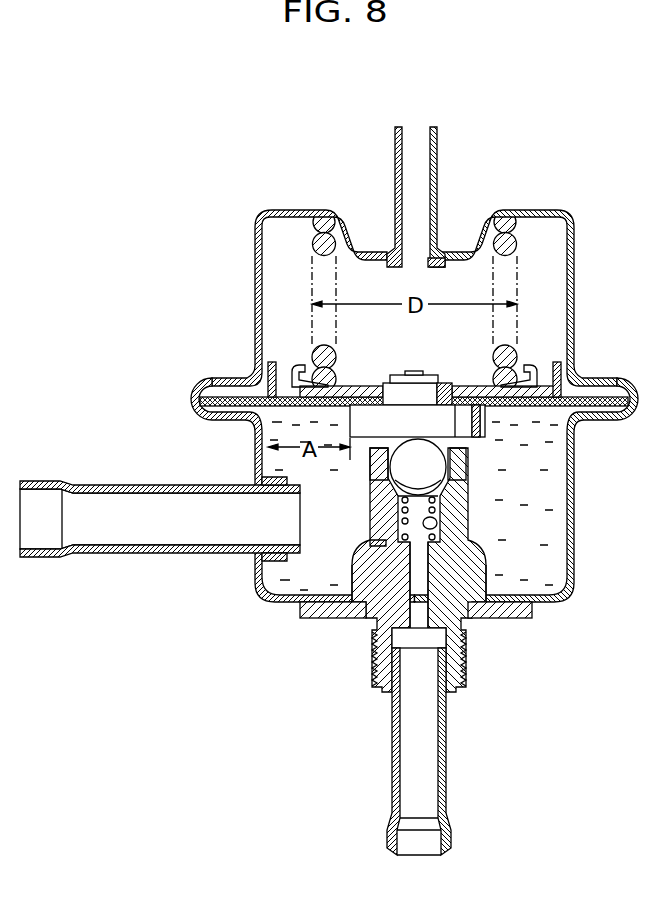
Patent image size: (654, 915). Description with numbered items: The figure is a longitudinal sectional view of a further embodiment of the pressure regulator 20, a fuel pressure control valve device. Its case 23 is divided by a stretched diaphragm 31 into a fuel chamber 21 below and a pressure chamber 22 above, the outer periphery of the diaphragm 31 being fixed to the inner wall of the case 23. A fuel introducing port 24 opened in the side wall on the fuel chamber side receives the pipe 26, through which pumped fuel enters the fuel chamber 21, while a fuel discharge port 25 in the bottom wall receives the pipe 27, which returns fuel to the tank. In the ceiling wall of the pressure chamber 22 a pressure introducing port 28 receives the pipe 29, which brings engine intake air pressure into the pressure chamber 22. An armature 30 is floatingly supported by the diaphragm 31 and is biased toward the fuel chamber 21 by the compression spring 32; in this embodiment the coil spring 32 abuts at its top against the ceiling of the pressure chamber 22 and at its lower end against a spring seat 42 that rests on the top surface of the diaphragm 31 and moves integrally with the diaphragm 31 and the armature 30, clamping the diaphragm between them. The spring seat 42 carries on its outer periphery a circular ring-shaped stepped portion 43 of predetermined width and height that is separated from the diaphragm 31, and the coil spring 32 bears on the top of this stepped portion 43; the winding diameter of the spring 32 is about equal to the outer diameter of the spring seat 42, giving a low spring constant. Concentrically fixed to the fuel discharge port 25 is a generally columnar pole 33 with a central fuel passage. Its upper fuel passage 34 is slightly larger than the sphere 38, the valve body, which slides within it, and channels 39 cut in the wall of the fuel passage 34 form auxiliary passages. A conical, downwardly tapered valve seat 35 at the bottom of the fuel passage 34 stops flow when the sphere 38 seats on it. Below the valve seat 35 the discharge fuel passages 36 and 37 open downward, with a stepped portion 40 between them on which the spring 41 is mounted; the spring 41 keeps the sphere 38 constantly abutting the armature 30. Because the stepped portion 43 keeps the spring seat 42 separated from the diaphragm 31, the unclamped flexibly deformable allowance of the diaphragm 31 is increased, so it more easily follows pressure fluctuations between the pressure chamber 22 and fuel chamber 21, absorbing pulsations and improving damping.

The pressure regulator 20 is at (338, 118).
The fuel chamber 21 is at (550, 515).
The pressure chamber 22 is at (540, 240).
The case 23 is at (573, 466).
The fuel introducing port 24 is at (257, 545).
The fuel discharge port 25 is at (360, 618).
The pipe 26 is at (137, 485).
The pipe 27 is at (447, 743).
The pressure introducing port 28 is at (428, 267).
The pipe 29 is at (395, 167).
The armature 30 is at (395, 373).
The diaphragm 31 is at (283, 408).
The compression spring 32 is at (500, 217).
The pole 33 is at (370, 512).
The fuel passage 34 is at (432, 467).
The valve seat 35 is at (440, 490).
The fuel passage 36 is at (425, 522).
The fuel passage 37 is at (425, 572).
The sphere 38 is at (400, 464).
The channels 39 is at (455, 472).
The stepped portion 40 is at (440, 548).
The spring 41 is at (385, 545).
The spring seat 42 is at (455, 383).
The stepped portion 43 is at (295, 386).